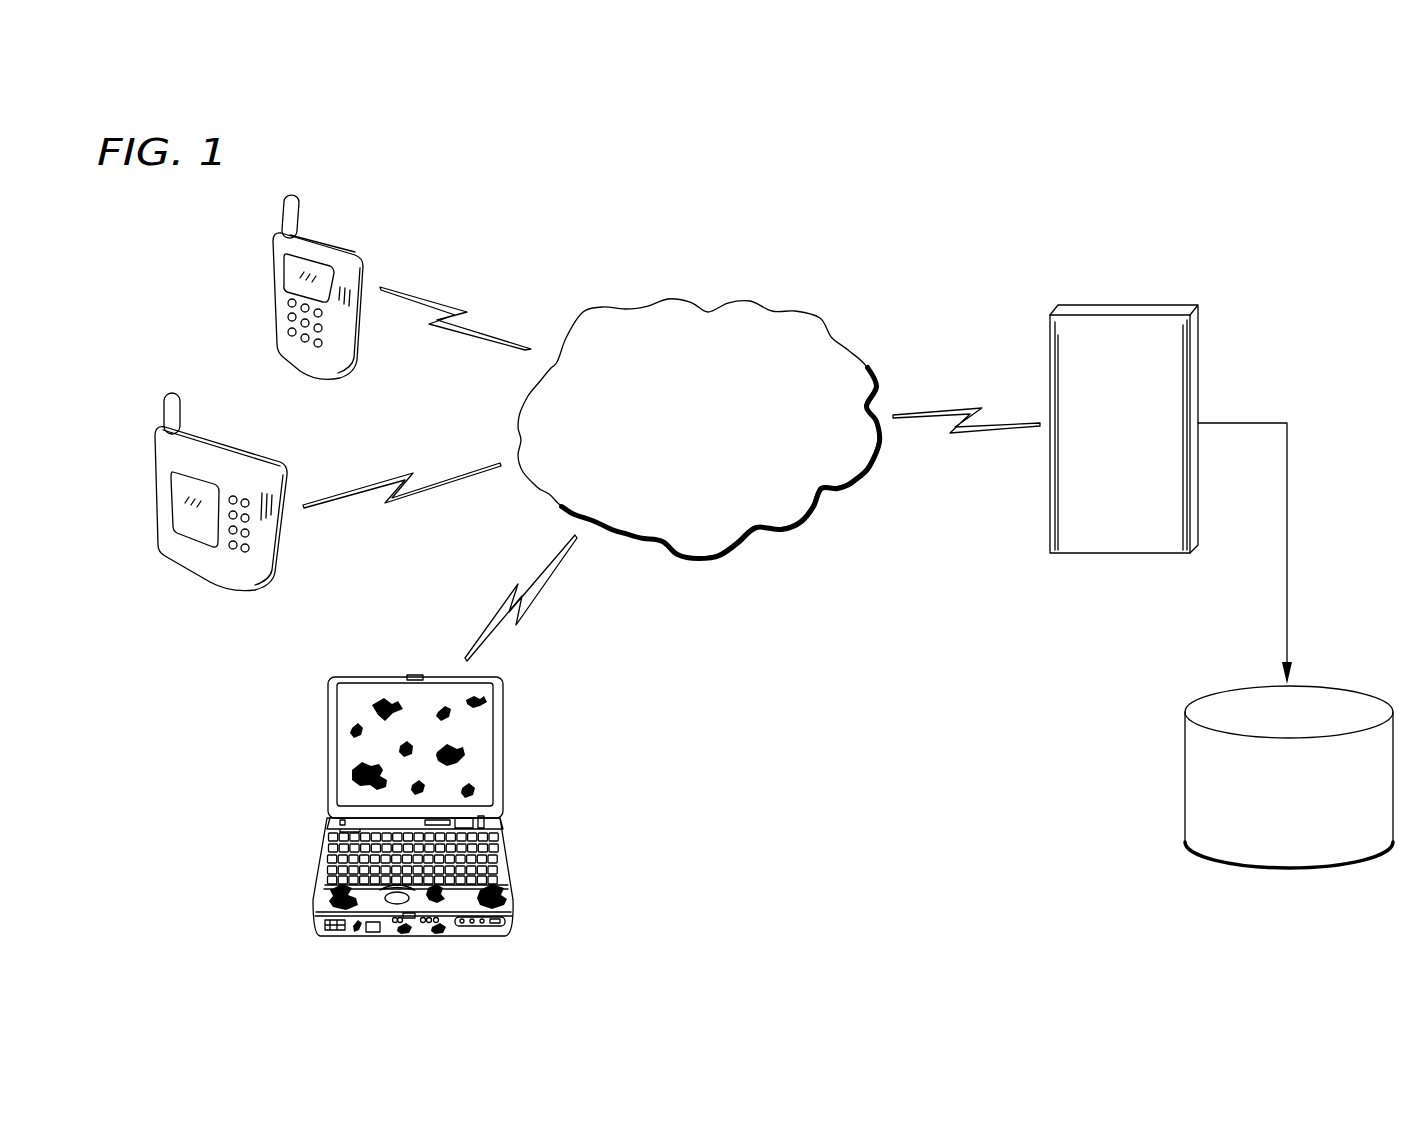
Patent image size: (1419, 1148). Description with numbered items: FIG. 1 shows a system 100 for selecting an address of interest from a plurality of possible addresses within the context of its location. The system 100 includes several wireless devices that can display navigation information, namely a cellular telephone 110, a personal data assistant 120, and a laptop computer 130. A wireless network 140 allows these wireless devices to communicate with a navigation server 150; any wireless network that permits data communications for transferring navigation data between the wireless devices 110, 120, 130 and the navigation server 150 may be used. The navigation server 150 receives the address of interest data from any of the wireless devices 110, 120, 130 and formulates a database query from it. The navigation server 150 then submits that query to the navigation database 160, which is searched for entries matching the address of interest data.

The system 100 is at (594, 250).
The cellular telephone 110 is at (272, 293).
The personal data assistant 120 is at (200, 574).
The laptop computer 130 is at (323, 750).
The wireless network 140 is at (697, 560).
The navigation server 150 is at (1048, 498).
The navigation database 160 is at (1185, 780).